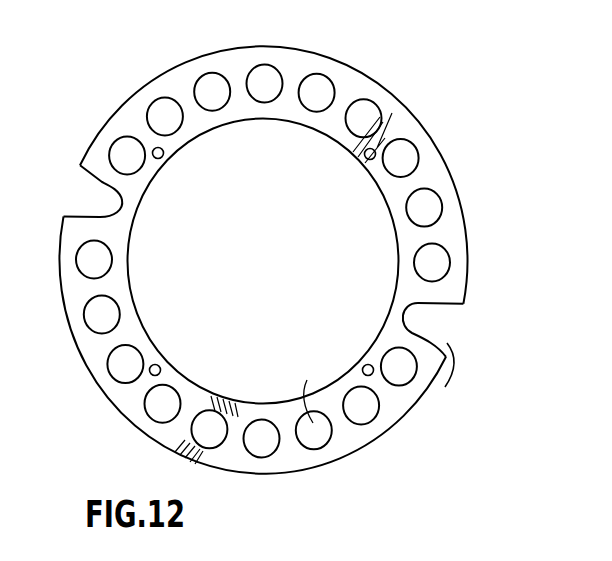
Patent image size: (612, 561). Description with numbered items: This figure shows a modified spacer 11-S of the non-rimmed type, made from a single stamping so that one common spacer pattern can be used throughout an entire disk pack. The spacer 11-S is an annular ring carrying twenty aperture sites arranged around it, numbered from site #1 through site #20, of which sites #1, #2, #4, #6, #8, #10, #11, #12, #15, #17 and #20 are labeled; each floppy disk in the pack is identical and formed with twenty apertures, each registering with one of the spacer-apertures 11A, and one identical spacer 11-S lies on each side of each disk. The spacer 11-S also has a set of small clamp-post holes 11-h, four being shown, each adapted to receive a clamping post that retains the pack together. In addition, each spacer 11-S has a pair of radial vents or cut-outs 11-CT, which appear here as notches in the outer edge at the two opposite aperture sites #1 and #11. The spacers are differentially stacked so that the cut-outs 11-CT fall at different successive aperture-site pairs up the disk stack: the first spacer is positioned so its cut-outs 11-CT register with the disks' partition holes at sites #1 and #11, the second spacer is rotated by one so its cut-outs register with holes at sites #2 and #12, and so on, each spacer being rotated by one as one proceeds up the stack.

The aperture site # 1 is at (433, 330).
The aperture site # 2 is at (422, 264).
The aperture site # 4 is at (392, 163).
The aperture site # 6 is at (316, 100).
The aperture site # 8 is at (215, 99).
The aperture site # 10 is at (130, 165).
The aperture site # 11 is at (90, 191).
The aperture site # 12 is at (105, 262).
The aperture site # 15 is at (152, 412).
The aperture site # 17 is at (270, 444).
The aperture site # 20 is at (408, 384).
The modified spacer 11-S is at (372, 74).
The clamp-post holes 11-h is at (156, 367).
The radial vents or cut-outs 11-CT is at (476, 376).
The spacer apertures 11A is at (395, 364).